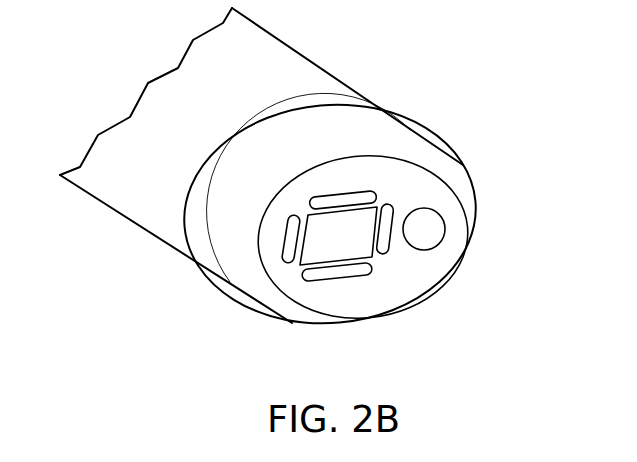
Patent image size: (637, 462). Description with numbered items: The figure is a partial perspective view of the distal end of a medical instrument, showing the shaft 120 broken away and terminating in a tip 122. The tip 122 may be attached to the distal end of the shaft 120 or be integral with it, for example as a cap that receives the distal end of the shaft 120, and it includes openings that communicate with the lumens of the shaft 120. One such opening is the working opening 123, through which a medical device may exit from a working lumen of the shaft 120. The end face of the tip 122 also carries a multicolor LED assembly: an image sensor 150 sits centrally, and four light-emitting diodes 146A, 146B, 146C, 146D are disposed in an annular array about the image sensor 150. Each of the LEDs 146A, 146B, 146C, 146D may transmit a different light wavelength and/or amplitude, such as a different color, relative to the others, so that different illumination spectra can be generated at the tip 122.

The shaft 120 is at (160, 92).
The tip 122 is at (241, 317).
The working opening 123 is at (432, 233).
The image sensor 150 is at (358, 228).
The light-emitting diode 146A is at (332, 200).
The light-emitting diode 146B is at (385, 248).
The light-emitting diode 146C is at (333, 276).
The light-emitting diode 146D is at (291, 258).